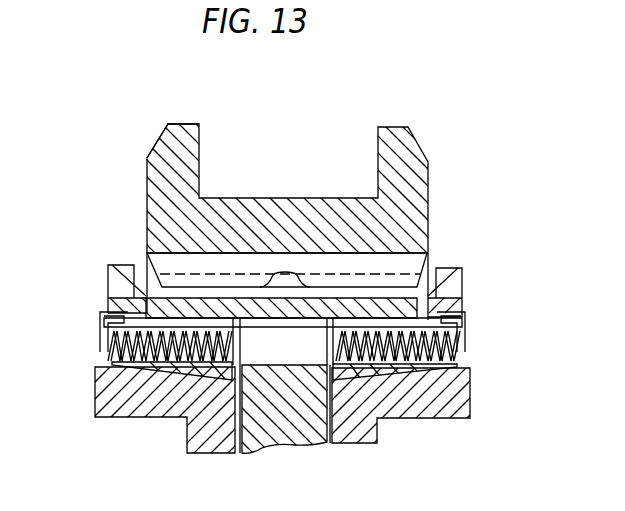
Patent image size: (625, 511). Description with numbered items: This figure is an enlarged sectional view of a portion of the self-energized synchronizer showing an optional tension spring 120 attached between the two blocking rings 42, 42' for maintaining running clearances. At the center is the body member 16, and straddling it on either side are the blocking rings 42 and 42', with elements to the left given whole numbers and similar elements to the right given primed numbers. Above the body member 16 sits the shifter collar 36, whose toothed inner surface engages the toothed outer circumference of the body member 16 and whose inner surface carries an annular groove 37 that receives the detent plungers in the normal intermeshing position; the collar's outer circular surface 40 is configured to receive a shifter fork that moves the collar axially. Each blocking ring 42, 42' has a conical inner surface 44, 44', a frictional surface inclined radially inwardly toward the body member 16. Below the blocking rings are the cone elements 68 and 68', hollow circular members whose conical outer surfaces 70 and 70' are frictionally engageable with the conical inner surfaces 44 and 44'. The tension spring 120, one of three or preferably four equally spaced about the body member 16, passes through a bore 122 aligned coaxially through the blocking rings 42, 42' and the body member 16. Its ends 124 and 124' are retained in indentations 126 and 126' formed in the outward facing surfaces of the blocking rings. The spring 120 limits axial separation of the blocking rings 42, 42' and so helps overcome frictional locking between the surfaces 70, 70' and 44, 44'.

The body member 16 is at (284, 413).
The shifter collar 36 is at (468, 147).
The annular groove 37 is at (300, 252).
The outer circular surface 40 is at (187, 124).
The blocking ring 42 is at (102, 289).
The blocking ring 42' is at (473, 297).
The conical inner surface 44 is at (137, 346).
The conical inner surface 44' is at (437, 346).
The cone element 68 is at (312, 255).
The cone element 68' is at (312, 255).
The conical outer surface 70 is at (139, 381).
The conical outer surface 70' is at (429, 381).
The tension spring 120 is at (243, 452).
The bore 122 is at (299, 367).
The end of the spring 124 is at (79, 323).
The end of the spring 124' is at (490, 329).
The indentation 126 is at (115, 270).
The indentation 126' is at (471, 269).